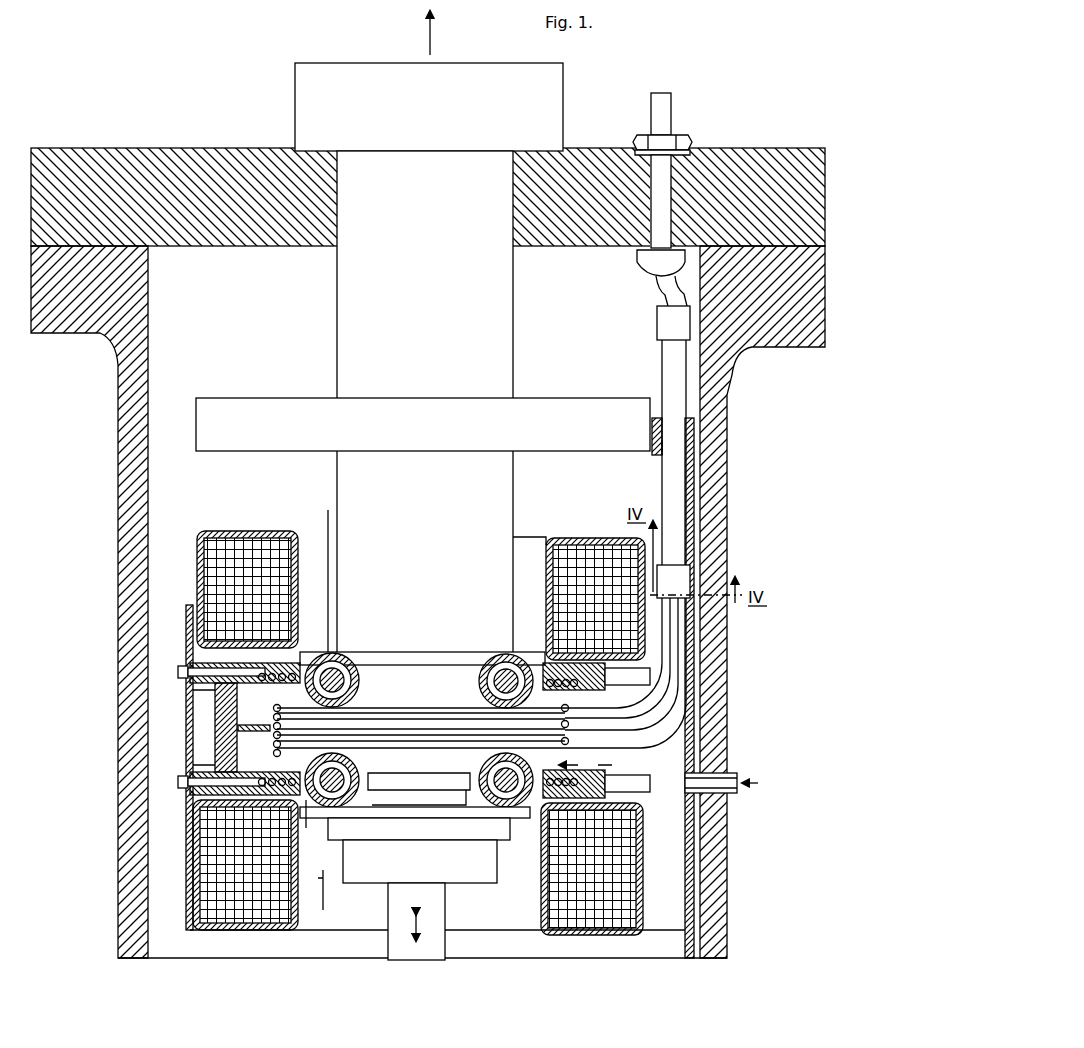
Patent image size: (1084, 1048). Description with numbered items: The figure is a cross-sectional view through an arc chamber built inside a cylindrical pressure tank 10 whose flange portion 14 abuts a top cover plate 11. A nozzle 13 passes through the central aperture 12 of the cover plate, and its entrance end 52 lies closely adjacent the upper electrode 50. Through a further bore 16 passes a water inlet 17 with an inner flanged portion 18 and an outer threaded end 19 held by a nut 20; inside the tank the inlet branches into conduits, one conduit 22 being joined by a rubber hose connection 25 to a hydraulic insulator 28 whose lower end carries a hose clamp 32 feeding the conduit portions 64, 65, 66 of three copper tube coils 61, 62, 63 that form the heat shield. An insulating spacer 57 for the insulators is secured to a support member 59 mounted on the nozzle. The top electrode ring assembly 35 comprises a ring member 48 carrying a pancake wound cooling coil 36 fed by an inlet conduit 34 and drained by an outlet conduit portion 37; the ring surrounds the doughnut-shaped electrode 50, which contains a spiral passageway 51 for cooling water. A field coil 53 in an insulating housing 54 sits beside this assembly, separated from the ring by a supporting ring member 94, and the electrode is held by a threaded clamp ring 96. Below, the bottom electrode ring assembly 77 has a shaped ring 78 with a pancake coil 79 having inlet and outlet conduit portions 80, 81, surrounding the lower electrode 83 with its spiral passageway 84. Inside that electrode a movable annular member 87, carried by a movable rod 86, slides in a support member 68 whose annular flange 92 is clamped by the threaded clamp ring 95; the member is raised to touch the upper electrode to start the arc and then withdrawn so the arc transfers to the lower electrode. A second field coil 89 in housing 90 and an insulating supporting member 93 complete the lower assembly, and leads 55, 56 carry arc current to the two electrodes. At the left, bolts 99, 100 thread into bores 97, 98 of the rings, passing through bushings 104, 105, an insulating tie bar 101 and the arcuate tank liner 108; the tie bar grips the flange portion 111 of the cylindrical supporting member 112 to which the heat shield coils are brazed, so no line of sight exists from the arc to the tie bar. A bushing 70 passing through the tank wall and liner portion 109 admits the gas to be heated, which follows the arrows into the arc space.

The pressure tank 10 is at (760, 479).
The top cover plate 11 is at (774, 170).
The central aperture 12 is at (512, 152).
The nozzle 13 is at (513, 330).
The flange portion 14 is at (801, 343).
The bore 16 is at (660, 198).
The water inlet 17 is at (652, 118).
The flanged portion 18 is at (641, 262).
The threaded end 19 is at (668, 138).
The nut 20 is at (638, 147).
The conduit 22 is at (660, 291).
The rubber hose connection 25 is at (658, 322).
The hydraulic insulator 28 is at (664, 378).
The hose clamp 32 is at (690, 577).
The inlet conduit 34 is at (638, 686).
The top electrode ring assembly 35 is at (596, 715).
The pancake wound cooling coil 36 is at (558, 693).
The outlet conduit portion 37 is at (617, 690).
The ring member 48 is at (560, 663).
The electrode 50 is at (350, 660).
The spiral passageway 51 is at (488, 660).
The entrance end 52 is at (420, 653).
The field coil 53 is at (590, 540).
The housing 54 is at (553, 538).
The lead 55 is at (328, 562).
The lead 56 is at (310, 890).
The spacer 57 is at (658, 456).
The support member 59 is at (262, 410).
The heat shield coil 61 is at (416, 716).
The heat shield coil 62 is at (374, 722).
The heat shield coil 63 is at (447, 732).
The conduit portion 64 is at (700, 668).
The conduit portion 65 is at (700, 725).
The conduit portion 66 is at (705, 748).
The support member 68 is at (410, 848).
The bushing 70 is at (741, 795).
The bottom electrode ring assembly 77 is at (586, 840).
The shaped ring 78 is at (604, 831).
The pancake coil 79 is at (558, 775).
The inlet conduit portion 80 is at (622, 786).
The outlet conduit portion 81 is at (620, 793).
The electrode 83 is at (482, 776).
The spiral passageway 84 is at (356, 776).
The movable rod 86 is at (389, 904).
The movable annular member 87 is at (419, 790).
The field coil 89 is at (636, 912).
The housing 90 is at (546, 914).
The annular flange 92 is at (460, 817).
The supporting member 93 is at (640, 810).
The supporting ring member 94 is at (190, 660).
The clamp ring 95 is at (308, 812).
The clamp ring 96 is at (316, 660).
The threaded bore 97 is at (268, 685).
The threaded bore 98 is at (268, 770).
The bolt 99 is at (180, 672).
The bolt 100 is at (181, 790).
The tie bar 101 is at (220, 740).
The bushing 104 is at (200, 684).
The bushing 105 is at (200, 780).
The tank liner 108 is at (192, 718).
The tank liner portion 109 is at (686, 944).
The flange portion 111 is at (254, 738).
The cylindrical supporting member 112 is at (273, 718).